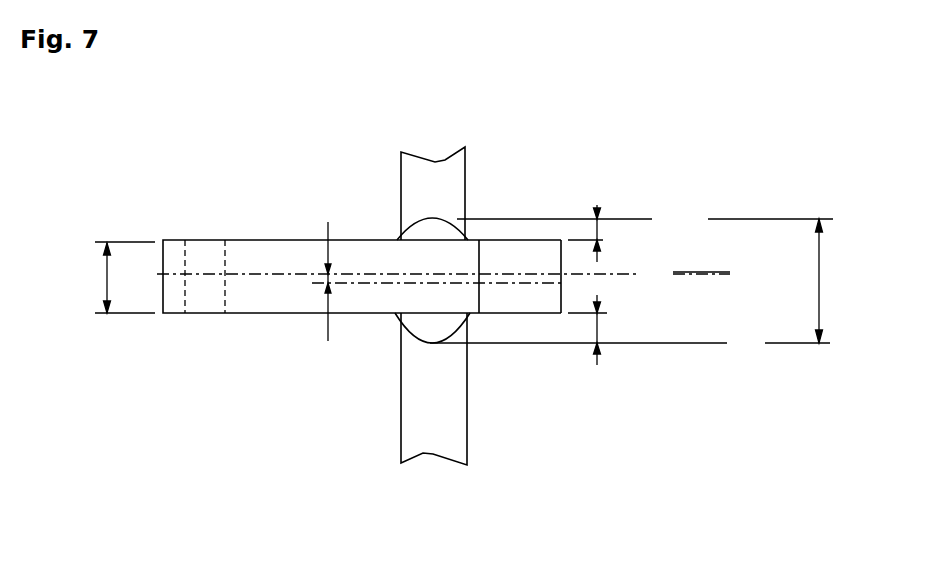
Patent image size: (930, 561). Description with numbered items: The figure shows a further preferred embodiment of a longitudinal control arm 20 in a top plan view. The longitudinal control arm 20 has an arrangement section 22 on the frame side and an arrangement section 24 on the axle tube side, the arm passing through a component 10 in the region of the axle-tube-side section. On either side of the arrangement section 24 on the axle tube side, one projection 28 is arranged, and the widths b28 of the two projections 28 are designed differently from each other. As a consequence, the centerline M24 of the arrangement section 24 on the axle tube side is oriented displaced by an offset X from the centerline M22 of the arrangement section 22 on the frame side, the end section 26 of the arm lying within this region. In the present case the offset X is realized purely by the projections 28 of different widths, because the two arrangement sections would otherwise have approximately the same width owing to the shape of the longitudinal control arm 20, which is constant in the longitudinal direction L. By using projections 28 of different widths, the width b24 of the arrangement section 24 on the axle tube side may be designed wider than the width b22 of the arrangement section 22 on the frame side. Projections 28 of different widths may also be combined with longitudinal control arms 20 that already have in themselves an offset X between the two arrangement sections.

The plate / component with bore 10 is at (415, 427).
The longitudinal control arm 20 is at (358, 222).
The arrangement section on the frame side 22 is at (202, 240).
The arrangement section on the axle tube side 24 is at (450, 205).
The end section of rod 26 is at (543, 248).
The projection 28 is at (450, 237).
The centerline of the arrangement section on the frame side M22 is at (162, 278).
The centerline of the arrangement section on the axle tube side M24 is at (527, 283).
The offset X is at (328, 341).
The width of the arrangement section on the frame side b22 is at (107, 288).
The width of the arrangement section on the axle tube side b24 is at (819, 283).
The width of the projection b28 is at (598, 262).
The longitudinal direction L is at (703, 272).